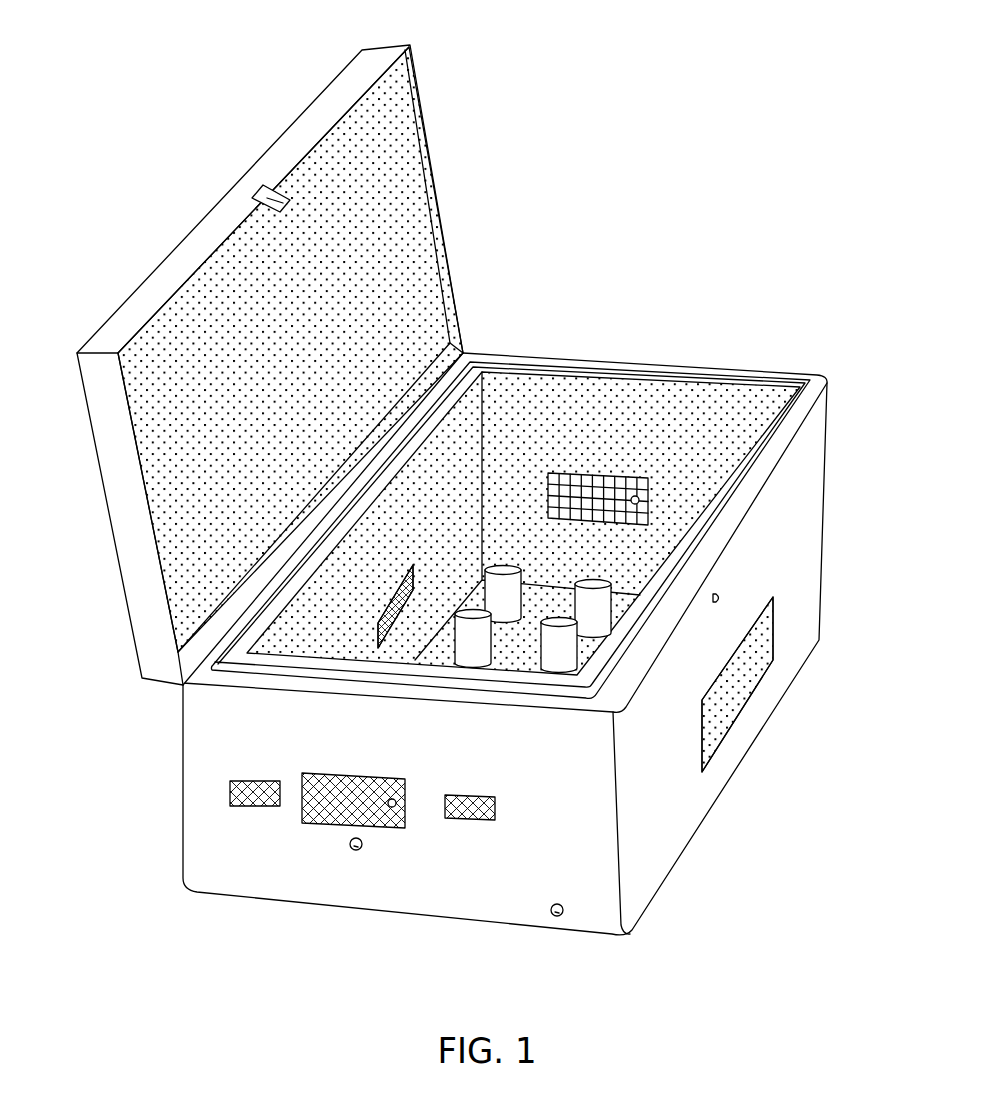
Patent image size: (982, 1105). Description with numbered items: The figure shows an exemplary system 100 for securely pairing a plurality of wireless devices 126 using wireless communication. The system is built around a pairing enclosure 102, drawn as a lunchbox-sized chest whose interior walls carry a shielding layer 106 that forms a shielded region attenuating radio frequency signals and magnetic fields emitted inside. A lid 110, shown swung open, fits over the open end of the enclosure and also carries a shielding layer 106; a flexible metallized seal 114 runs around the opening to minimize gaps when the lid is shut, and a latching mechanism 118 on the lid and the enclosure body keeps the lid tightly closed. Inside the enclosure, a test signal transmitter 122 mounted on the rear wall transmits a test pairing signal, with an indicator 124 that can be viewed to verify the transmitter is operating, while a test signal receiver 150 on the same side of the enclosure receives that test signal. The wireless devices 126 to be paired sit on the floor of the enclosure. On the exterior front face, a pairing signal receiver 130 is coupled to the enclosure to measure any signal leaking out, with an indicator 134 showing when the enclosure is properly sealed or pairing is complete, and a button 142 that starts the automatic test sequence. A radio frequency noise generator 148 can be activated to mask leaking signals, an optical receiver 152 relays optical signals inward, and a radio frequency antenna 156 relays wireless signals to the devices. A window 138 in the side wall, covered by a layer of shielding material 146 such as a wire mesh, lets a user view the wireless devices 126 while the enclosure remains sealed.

The system 100 is at (308, 50).
The pairing enclosure 102 is at (183, 770).
The shielding layer 106 is at (395, 142).
The lid 110 is at (152, 593).
The flexible metallized seal 114 is at (531, 695).
The latching mechanism 118 is at (256, 192).
The test signal transmitter 122 is at (585, 473).
The indicator 124 is at (634, 496).
The wireless devices 126 is at (477, 612).
The pairing signal receiver 130 is at (320, 823).
The indicator 134 is at (397, 805).
The window 138 is at (743, 705).
The button 142 is at (363, 848).
The layer of shielding material 146 is at (755, 658).
The radio frequency noise generator 148 is at (247, 782).
The test signal receiver 150 is at (380, 614).
The optical receiver 152 is at (567, 913).
The radio frequency antenna 156 is at (463, 795).